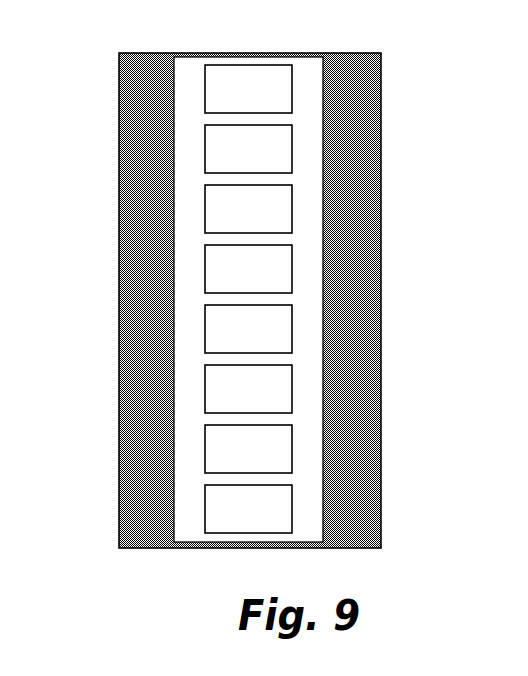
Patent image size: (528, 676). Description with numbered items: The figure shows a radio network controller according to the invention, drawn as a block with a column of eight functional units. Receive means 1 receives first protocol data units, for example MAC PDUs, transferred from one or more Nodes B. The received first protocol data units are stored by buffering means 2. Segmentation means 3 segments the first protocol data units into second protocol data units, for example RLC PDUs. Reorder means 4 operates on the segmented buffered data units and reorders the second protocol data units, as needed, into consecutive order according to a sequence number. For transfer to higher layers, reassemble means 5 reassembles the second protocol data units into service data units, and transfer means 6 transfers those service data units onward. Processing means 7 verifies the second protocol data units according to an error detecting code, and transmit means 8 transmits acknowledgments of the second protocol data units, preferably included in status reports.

The receive means 1 is at (305, 90).
The buffering means 2 is at (305, 150).
The segmentation means 3 is at (305, 210).
The reorder means 4 is at (305, 270).
The reassemble means 5 is at (305, 330).
The transfer means 6 is at (305, 390).
The processing means 7 is at (305, 450).
The transmit means 8 is at (305, 510).